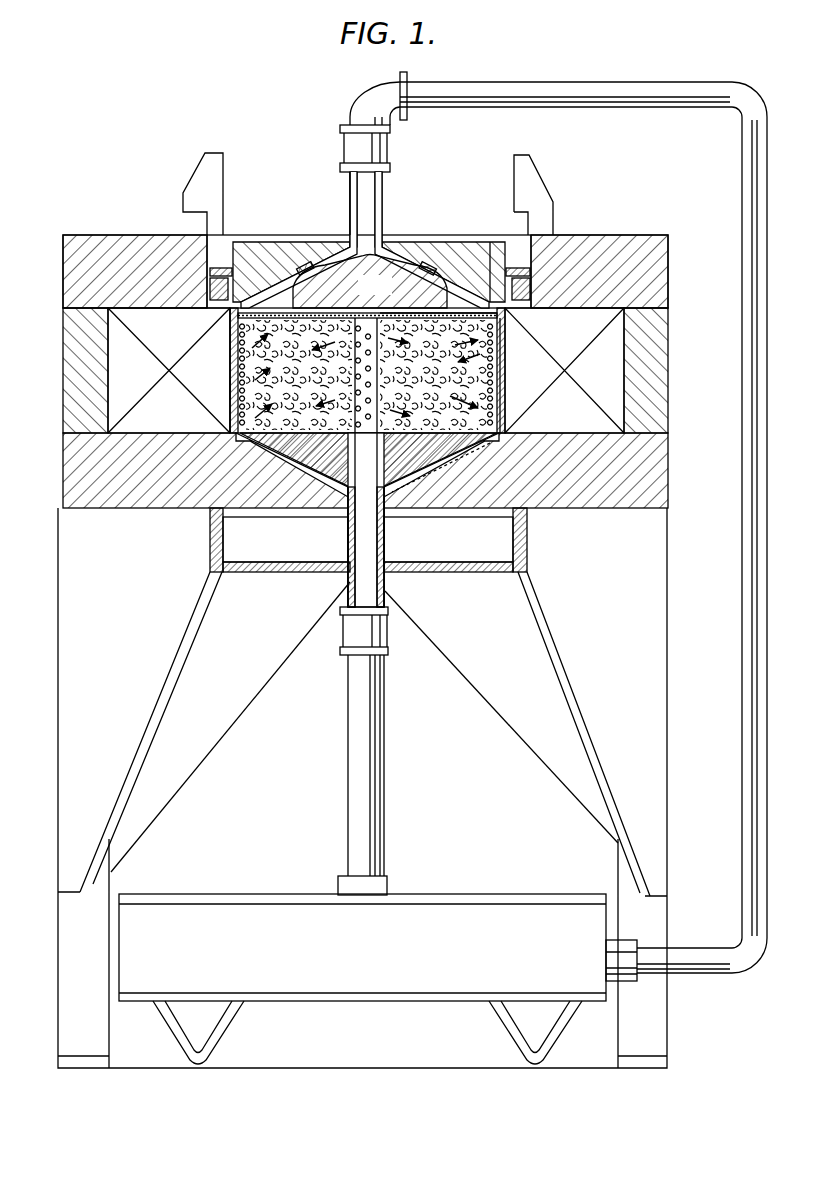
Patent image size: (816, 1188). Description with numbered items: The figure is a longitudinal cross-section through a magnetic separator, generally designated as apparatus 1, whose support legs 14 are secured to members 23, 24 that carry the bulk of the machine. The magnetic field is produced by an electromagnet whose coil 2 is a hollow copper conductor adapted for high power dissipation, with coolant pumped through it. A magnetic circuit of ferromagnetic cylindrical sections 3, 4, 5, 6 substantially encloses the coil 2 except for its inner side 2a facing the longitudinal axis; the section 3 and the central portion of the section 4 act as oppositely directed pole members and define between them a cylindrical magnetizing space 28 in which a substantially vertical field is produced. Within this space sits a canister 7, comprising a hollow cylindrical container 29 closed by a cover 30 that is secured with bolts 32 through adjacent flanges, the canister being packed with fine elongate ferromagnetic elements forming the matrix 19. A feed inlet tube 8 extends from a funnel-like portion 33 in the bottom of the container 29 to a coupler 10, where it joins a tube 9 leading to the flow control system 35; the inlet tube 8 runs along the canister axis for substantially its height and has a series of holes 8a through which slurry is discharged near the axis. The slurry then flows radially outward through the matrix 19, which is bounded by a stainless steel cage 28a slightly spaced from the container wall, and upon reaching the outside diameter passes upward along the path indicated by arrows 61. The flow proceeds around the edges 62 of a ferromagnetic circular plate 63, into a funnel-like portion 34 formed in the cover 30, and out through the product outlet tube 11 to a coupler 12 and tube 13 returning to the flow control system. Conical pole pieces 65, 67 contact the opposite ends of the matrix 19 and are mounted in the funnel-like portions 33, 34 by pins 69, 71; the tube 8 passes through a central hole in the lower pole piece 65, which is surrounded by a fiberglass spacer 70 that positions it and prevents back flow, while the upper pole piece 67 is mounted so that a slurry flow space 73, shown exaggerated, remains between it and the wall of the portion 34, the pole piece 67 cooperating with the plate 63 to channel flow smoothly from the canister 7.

The magnetic separator apparatus 1 is at (180, 233).
The coil 2 is at (175, 361).
The inner side of coil 2a is at (230, 381).
The cylindrical section 3 is at (306, 245).
The cylindrical section 4 is at (63, 461).
The cylindrical section 5 is at (63, 367).
The cylindrical section 6 is at (63, 283).
The canister 7 is at (228, 392).
The feed inlet tube 8 is at (380, 592).
The holes 8a is at (356, 372).
The tube 9 is at (384, 830).
The coupler 10 is at (387, 630).
The product outlet tube 11 is at (376, 222).
The coupler 12 is at (388, 158).
The tube 13 is at (660, 106).
The support legs 14 is at (665, 1009).
The matrix 19 is at (392, 466).
The member 23 is at (540, 779).
The member 24 is at (614, 796).
The magnetizing space 28 is at (500, 371).
The cage 28a is at (500, 398).
The hollow cylindrical container 29 is at (500, 417).
The cover 30 is at (284, 298).
The bolts 32 is at (212, 268).
The funnel-like portion 33 is at (440, 452).
The funnel-like portion 34 is at (290, 243).
The flow control system 35 is at (508, 916).
The arrows 61 is at (500, 320).
The edges of circular plate 62 is at (238, 318).
The circular plate 63 is at (400, 316).
The conical pole piece 65 is at (392, 474).
The conical pole piece 67 is at (446, 290).
The pins 69 is at (300, 478).
The fiberglass spacer 70 is at (268, 436).
The pins 71 is at (328, 260).
The slurry flow space 73 is at (470, 298).